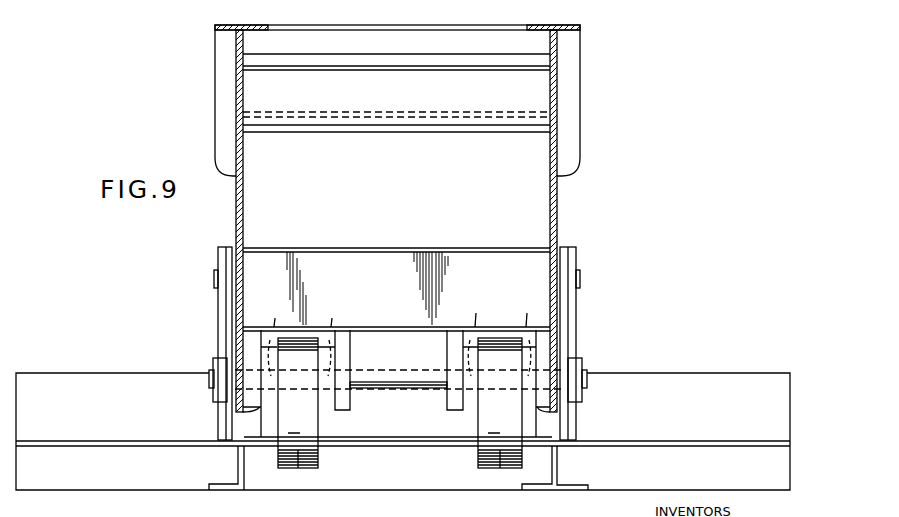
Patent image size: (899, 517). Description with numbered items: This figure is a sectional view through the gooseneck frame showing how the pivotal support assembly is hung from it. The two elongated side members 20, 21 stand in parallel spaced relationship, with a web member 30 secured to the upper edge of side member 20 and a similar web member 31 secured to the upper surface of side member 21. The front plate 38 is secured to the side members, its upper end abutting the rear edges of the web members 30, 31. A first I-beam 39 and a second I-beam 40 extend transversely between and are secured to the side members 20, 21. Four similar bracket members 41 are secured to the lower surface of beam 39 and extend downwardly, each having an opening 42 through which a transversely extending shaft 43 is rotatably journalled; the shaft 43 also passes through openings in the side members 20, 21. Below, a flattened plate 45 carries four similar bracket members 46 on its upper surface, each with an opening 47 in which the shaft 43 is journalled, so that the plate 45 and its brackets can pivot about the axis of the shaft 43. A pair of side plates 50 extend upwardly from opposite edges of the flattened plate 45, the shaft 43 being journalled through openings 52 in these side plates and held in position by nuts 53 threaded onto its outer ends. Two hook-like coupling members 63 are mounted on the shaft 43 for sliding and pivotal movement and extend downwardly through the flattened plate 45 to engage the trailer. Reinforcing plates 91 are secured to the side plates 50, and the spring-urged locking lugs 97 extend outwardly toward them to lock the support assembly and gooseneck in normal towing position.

The side member 20 is at (557, 203).
The side member 21 is at (236, 208).
The web member 30 is at (574, 25).
The web member 31 is at (226, 24).
The front plate 38 is at (397, 15).
The first I-beam 39 is at (407, 248).
The second I-beam 40 is at (421, 134).
The bracket member 41 is at (260, 408).
The opening 42 is at (352, 362).
The shaft 43 is at (403, 388).
The flattened plate 45 is at (405, 430).
The bracket member 46 is at (272, 435).
The opening 47 is at (399, 309).
The side plate 50 is at (232, 314).
The opening 52 is at (218, 365).
The nut 53 is at (217, 393).
The coupling member 63 is at (300, 464).
The reinforcing plate 91 is at (218, 258).
The locking lug 97 is at (214, 280).